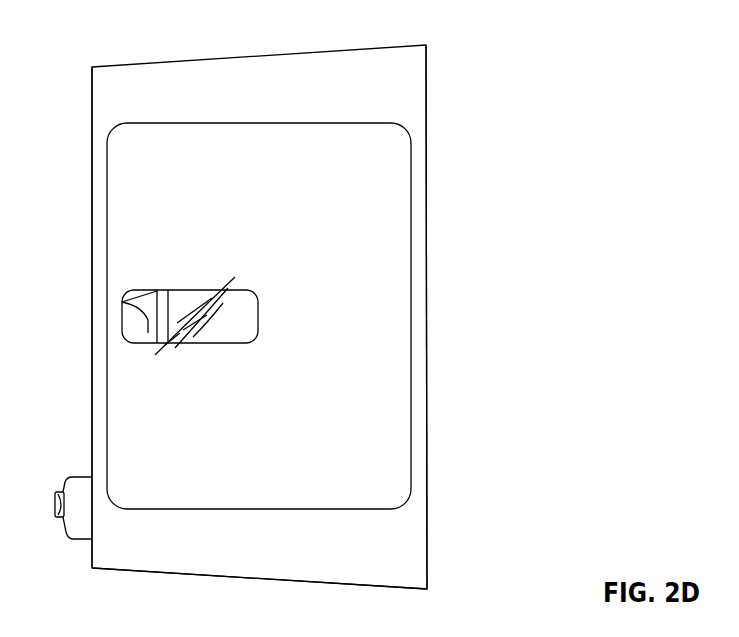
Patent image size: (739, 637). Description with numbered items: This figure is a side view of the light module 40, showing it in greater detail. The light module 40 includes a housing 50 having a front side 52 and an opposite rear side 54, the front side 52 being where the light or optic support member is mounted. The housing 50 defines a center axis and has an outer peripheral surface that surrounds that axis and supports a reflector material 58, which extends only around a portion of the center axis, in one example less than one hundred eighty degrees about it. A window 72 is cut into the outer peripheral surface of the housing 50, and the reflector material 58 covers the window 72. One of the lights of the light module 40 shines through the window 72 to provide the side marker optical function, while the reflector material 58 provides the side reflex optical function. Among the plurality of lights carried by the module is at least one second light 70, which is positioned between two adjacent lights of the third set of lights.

The light module 40 is at (422, 32).
The housing 50 is at (253, 578).
The front side 52 is at (92, 178).
The rear side 54 is at (427, 133).
The reflector material 58 is at (382, 422).
The second light 70 is at (73, 520).
The window 72 is at (143, 328).